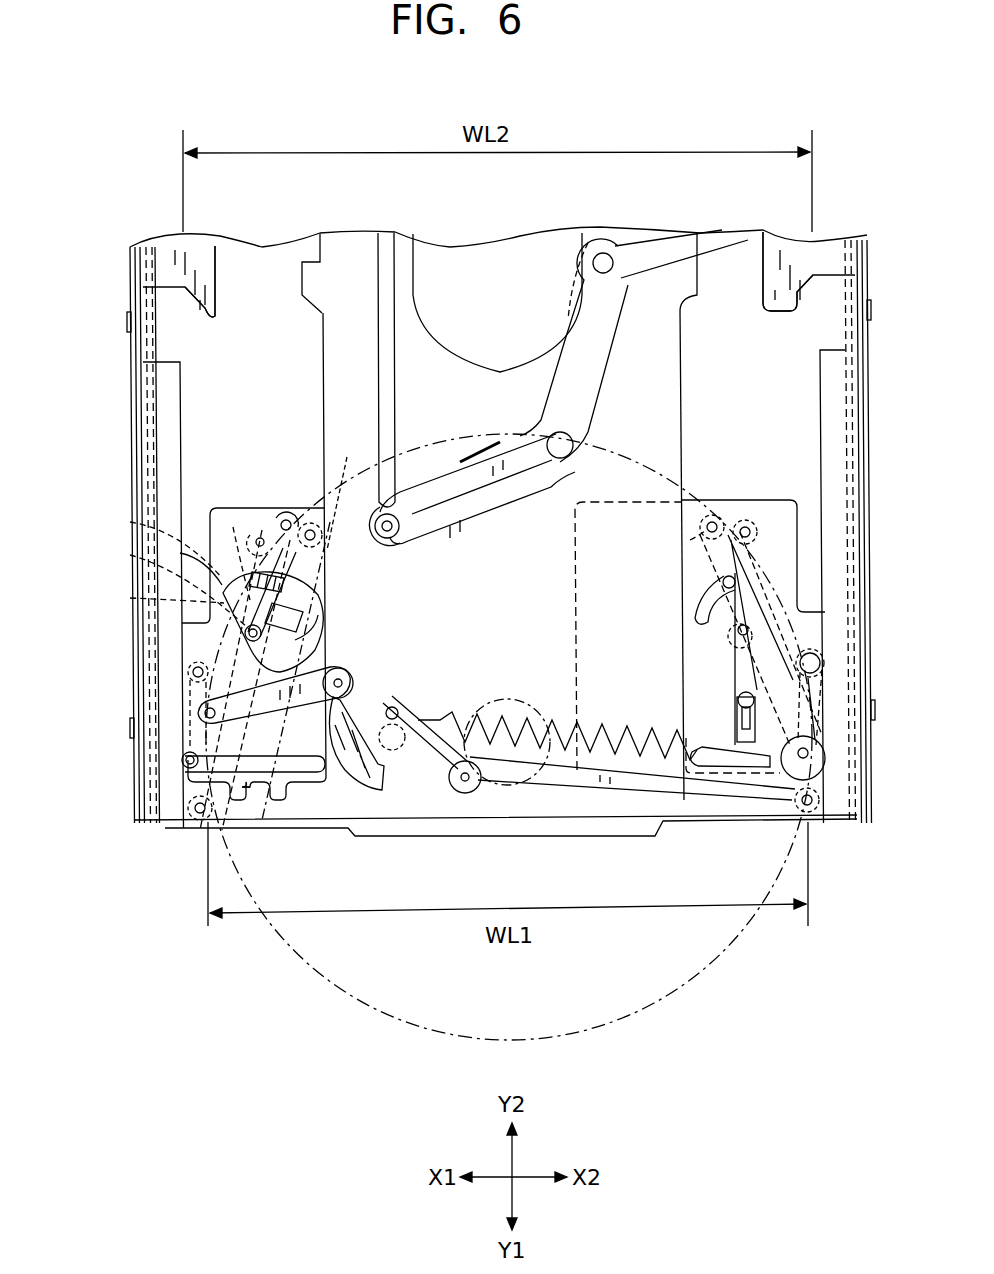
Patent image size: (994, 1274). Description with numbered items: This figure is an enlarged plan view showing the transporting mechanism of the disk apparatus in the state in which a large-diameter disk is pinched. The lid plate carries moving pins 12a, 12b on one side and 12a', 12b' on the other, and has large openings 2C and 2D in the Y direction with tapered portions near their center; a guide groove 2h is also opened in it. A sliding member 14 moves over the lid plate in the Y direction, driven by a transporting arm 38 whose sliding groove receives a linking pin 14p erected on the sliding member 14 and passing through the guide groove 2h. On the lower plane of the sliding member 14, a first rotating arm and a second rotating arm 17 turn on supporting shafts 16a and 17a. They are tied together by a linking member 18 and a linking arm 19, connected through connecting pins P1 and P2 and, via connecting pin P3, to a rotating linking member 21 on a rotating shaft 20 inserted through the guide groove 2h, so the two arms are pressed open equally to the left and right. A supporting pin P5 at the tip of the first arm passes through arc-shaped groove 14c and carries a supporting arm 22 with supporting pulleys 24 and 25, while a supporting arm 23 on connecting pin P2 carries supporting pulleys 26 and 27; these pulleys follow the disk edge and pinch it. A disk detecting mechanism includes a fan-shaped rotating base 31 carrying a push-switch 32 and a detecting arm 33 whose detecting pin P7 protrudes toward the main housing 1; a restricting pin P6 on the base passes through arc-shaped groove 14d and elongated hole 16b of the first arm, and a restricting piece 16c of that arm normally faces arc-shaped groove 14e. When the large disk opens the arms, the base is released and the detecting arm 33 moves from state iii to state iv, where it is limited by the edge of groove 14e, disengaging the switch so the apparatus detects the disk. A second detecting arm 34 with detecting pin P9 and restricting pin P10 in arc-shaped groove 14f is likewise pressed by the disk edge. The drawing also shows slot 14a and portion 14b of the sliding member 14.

The main housing 1 is at (133, 460).
The moving pin 12a is at (908, 712).
The moving pin 12a' is at (86, 732).
The moving pin 12b is at (907, 313).
The moving pin 12b' is at (91, 325).
The large opening 2C is at (324, 413).
The large opening 2D is at (684, 432).
The guide groove 2h is at (396, 401).
The sliding member 14 is at (576, 570).
The slot of holder plate 14a is at (264, 716).
The guide portion 14b is at (714, 756).
The arc-shaped groove 14c is at (303, 793).
The arc-shaped groove 14d is at (132, 522).
The arc-shaped groove 14e is at (318, 622).
The arc-shaped groove 14f is at (703, 628).
The linking pin 14p is at (393, 507).
The supporting shaft 16a is at (255, 518).
The elongated hole 16b is at (233, 527).
The restricting piece 16c is at (290, 583).
The rotating arm 17 is at (773, 568).
The supporting shaft 17a is at (749, 525).
The linking member 18 is at (310, 704).
The linking arm 19 is at (602, 800).
The rotating shaft 20 is at (412, 716).
The rotating linking member 21 is at (416, 762).
The supporting arm 22 is at (200, 706).
The supporting arm 23 is at (822, 670).
The supporting pulley 24 is at (201, 822).
The supporting pulley 25 is at (190, 668).
The supporting pulley 26 is at (815, 818).
The supporting pulley 27 is at (824, 660).
The rotating base 31 is at (345, 680).
The push-switch 32 is at (305, 612).
The detecting arm 33 is at (303, 568).
The detecting arm 34 is at (720, 583).
The transporting arm 38 is at (592, 422).
The connecting pin P1 is at (204, 713).
The connecting pin P2 is at (826, 752).
The connecting pin P3 is at (398, 704).
The supporting pin P5 is at (182, 760).
The restricting pin P6 is at (132, 598).
The detecting pin P7 is at (297, 507).
The detecting pin P9 is at (712, 520).
The restricting pin P10 is at (722, 586).
The detecting arm state iii is at (341, 491).
The detecting arm state iv is at (283, 520).